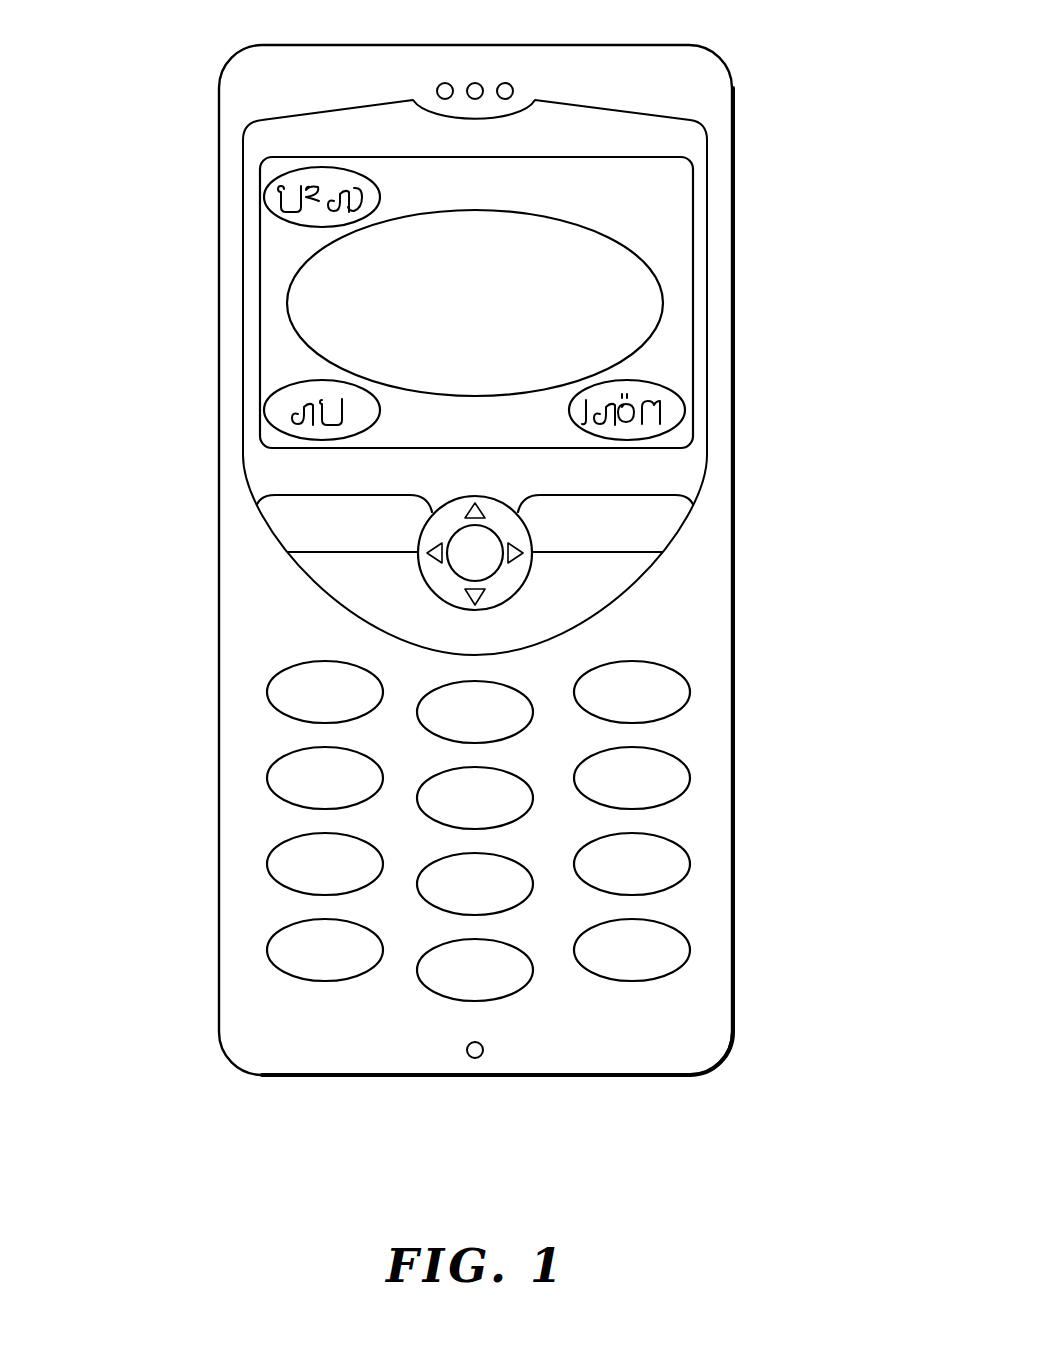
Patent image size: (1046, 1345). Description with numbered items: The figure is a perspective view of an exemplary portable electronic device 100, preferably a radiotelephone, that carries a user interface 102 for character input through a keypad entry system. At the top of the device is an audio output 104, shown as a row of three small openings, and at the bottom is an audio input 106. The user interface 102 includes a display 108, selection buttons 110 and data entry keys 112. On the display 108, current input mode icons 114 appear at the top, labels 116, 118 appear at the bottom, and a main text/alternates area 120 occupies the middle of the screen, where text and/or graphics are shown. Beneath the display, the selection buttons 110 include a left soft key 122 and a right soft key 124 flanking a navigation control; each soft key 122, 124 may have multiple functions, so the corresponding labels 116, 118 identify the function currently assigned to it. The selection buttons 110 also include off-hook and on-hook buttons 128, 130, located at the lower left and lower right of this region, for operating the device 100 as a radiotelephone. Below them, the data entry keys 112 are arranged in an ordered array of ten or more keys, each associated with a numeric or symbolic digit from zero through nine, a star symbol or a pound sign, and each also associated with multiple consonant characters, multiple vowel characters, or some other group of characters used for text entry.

The portable electronic device 100 is at (822, 20).
The user interface 102 is at (426, 579).
The audio output 104 is at (475, 84).
The audio input 106 is at (476, 1058).
The display 108 is at (193, 158).
The selection buttons 110 is at (193, 485).
The data entry keys 112 is at (195, 655).
The current input mode icons 114 is at (379, 191).
The label 116 is at (380, 417).
The label 118 is at (680, 417).
The main text/alternates area 120 is at (577, 222).
The left soft key 122 is at (315, 505).
The right soft key 124 is at (635, 505).
The off-hook button 128 is at (330, 582).
The on-hook button 130 is at (620, 582).